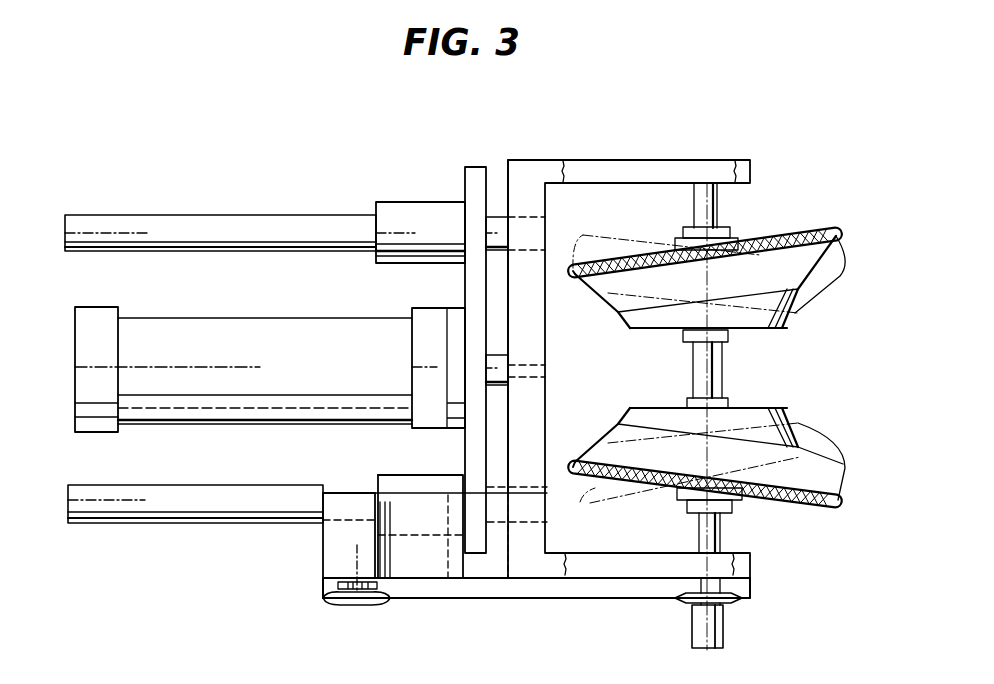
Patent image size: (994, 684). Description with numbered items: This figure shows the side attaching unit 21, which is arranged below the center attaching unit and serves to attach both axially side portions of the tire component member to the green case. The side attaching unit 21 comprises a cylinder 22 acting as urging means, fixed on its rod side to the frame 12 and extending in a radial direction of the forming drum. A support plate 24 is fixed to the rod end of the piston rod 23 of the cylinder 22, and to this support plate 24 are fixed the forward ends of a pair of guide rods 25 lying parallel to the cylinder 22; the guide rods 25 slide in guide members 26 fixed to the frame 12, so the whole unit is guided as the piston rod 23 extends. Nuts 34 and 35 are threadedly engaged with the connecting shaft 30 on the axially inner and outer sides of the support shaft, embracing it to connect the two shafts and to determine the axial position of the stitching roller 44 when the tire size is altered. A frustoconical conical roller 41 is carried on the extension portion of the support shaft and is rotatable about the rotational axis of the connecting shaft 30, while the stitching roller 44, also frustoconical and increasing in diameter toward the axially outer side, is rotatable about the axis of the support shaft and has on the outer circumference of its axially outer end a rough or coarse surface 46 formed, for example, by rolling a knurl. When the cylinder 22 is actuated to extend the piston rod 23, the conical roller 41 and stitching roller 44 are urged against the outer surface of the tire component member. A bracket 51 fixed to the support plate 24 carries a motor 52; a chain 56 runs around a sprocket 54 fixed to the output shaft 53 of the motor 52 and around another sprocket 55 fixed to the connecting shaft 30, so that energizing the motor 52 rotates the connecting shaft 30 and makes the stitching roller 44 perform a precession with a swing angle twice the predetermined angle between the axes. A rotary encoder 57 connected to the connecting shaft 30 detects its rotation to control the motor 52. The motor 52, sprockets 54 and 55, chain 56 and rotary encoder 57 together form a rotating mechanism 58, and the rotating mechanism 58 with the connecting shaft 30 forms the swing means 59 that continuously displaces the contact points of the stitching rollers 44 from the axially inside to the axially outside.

The frame 12 is at (473, 182).
The side attaching unit 21 is at (389, 192).
The cylinder 22 is at (262, 321).
The piston rod 23 is at (495, 357).
The support plate 24 is at (618, 172).
The guide rods 25 is at (238, 216).
The guide members 26 is at (432, 216).
The connecting shaft 30 is at (718, 205).
The nut 34 is at (683, 341).
The nut 35 is at (684, 231).
The conical roller 41 is at (785, 331).
The stitching roller 44 is at (614, 311).
The rough or coarse surface 46 is at (813, 229).
The bracket 51 is at (453, 571).
The motor 52 is at (323, 556).
The output shaft 53 is at (330, 583).
The sprocket 54 is at (355, 606).
The sprocket 55 is at (742, 598).
The chain 56 is at (545, 599).
The rotary encoder 57 is at (724, 636).
The rotating mechanism 58 is at (608, 599).
The swing means 59 is at (741, 552).